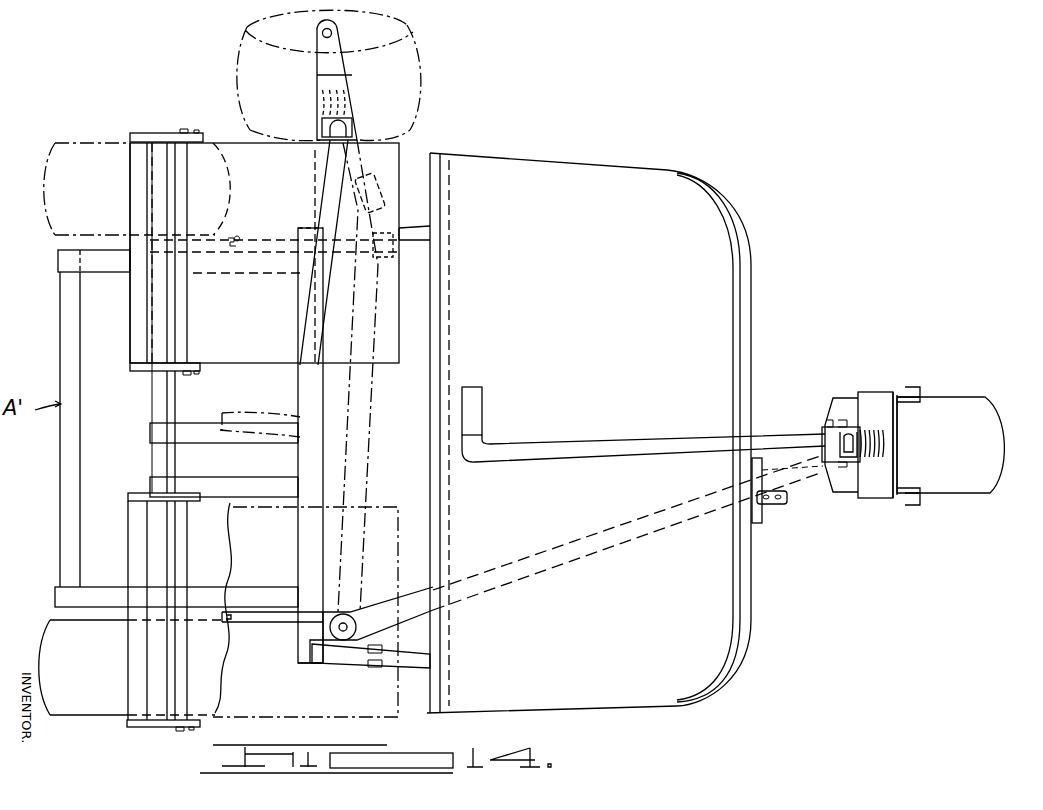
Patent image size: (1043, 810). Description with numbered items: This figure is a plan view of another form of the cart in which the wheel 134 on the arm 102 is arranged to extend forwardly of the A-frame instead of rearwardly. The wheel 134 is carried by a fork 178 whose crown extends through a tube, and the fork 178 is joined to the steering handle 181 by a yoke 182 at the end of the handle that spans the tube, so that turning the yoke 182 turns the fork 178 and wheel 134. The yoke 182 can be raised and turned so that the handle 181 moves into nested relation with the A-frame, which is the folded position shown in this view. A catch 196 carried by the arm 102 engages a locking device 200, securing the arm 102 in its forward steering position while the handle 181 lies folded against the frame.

The wheel 134 is at (410, 80).
The fork 178 is at (885, 395).
The yoke 182 is at (822, 428).
The steering handle 181 is at (610, 447).
The catch 196 is at (755, 477).
The arm 102 is at (800, 470).
The locking device 200 is at (790, 507).